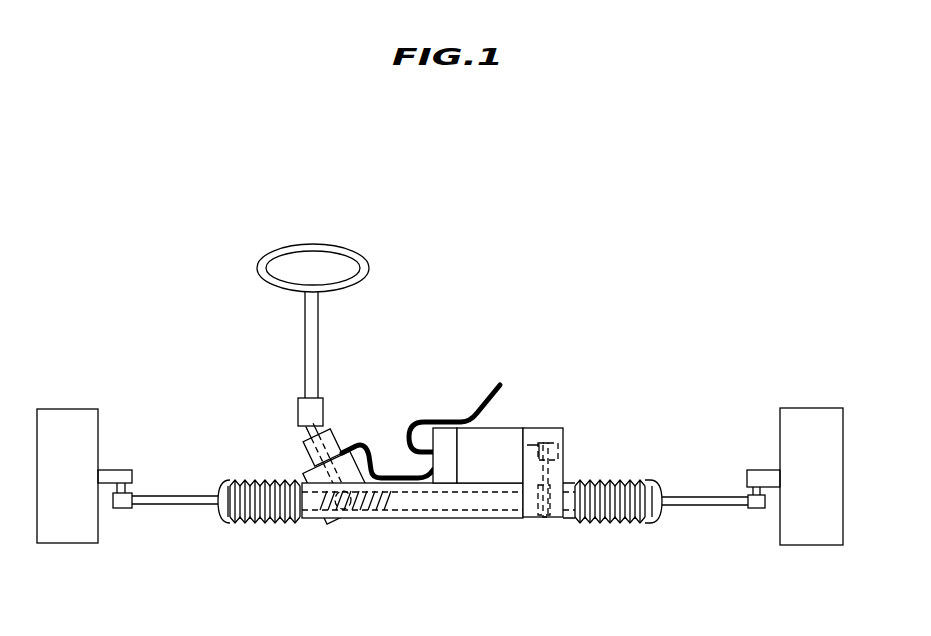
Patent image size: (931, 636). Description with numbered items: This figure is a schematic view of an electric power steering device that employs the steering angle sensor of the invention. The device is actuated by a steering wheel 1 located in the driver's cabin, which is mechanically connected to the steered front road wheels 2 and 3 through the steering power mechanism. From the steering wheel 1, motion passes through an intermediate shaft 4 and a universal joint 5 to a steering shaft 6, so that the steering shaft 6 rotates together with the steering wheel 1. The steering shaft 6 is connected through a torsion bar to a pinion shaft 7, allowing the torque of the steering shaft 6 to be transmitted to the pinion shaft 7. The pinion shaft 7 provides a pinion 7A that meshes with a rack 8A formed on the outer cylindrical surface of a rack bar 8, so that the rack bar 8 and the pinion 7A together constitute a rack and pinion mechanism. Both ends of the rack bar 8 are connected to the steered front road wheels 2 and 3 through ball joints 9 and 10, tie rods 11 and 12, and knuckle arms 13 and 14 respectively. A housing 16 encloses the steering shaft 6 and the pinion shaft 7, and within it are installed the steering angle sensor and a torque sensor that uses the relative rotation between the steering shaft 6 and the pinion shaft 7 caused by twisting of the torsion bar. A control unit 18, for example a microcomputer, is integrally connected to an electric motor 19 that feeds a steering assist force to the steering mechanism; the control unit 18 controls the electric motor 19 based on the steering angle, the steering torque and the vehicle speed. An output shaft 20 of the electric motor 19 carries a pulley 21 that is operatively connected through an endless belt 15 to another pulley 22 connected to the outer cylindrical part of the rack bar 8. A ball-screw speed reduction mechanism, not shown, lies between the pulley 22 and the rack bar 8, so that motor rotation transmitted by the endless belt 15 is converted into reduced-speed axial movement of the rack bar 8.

The steering wheel 1 is at (326, 246).
The steered front road wheel 2 is at (67, 422).
The steered front road wheel 3 is at (808, 420).
The intermediate shaft 4 is at (313, 318).
The universal joint 5 is at (298, 412).
The steering shaft 6 is at (333, 436).
The pinion shaft 7 is at (380, 451).
The pinion 7A is at (334, 522).
The rack bar 8 is at (495, 503).
The rack 8A is at (357, 505).
The ball joint 9 is at (225, 523).
The ball joint 10 is at (650, 515).
The tie rod 11 is at (175, 505).
The tie rod 12 is at (705, 508).
The knuckle arm 13 is at (115, 468).
The knuckle arm 14 is at (765, 470).
The endless belt 15 is at (548, 470).
The housing 16 is at (303, 462).
The control unit 18 is at (447, 438).
The electric motor 19 is at (497, 438).
The output shaft 20 is at (535, 448).
The pulley 21 is at (553, 436).
The pulley 22 is at (555, 517).